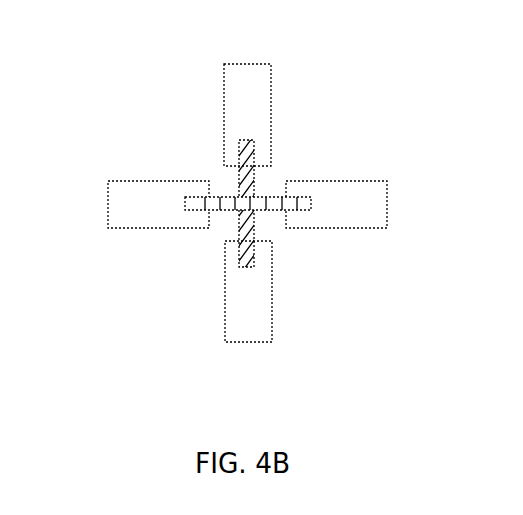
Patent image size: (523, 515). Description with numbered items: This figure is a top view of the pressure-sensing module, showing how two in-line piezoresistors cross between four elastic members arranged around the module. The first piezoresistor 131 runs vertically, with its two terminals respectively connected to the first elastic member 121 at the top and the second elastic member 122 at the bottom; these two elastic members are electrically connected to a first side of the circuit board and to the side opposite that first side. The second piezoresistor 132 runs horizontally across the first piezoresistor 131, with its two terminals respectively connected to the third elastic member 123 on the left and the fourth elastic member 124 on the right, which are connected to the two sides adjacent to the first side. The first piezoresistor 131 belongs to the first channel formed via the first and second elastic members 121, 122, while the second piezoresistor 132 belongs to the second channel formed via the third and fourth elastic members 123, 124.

The first elastic member 121 is at (251, 75).
The second elastic member 122 is at (245, 333).
The third elastic member 123 is at (118, 205).
The fourth elastic member 124 is at (363, 209).
The first piezoresistor 131 is at (253, 153).
The second piezoresistor 132 is at (190, 197).